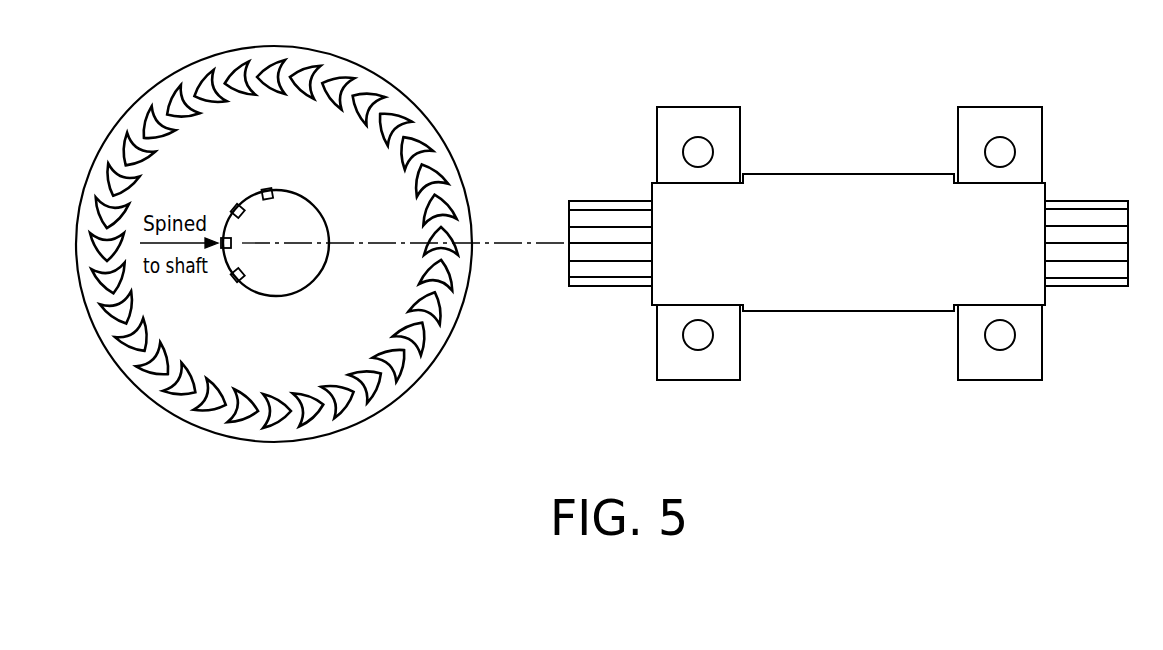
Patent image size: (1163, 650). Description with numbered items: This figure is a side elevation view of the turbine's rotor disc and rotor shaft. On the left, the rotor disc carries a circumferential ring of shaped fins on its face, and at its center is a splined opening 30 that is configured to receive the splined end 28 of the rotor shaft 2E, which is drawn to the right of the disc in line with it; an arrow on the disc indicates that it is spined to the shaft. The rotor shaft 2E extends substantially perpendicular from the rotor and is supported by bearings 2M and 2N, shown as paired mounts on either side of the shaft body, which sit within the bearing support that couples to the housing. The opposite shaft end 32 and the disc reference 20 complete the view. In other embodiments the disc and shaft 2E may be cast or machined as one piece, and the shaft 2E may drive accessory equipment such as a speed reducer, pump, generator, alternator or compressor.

The turbine disc with blades 20 is at (262, 358).
The splined opening 30 is at (288, 207).
The splined end 28 is at (598, 200).
The second shaft end 32 is at (1098, 200).
The rotor shaft 2E is at (823, 262).
The bearing 2M is at (740, 129).
The bearing 2N is at (997, 107).